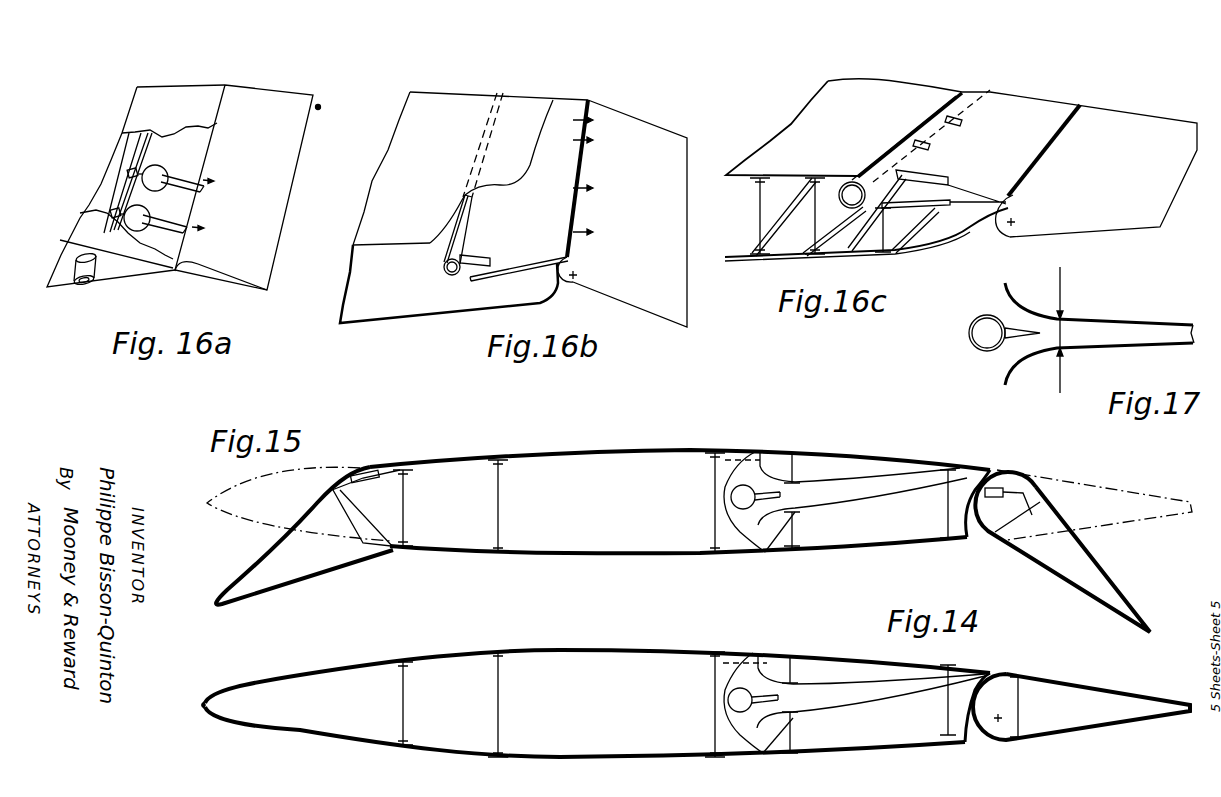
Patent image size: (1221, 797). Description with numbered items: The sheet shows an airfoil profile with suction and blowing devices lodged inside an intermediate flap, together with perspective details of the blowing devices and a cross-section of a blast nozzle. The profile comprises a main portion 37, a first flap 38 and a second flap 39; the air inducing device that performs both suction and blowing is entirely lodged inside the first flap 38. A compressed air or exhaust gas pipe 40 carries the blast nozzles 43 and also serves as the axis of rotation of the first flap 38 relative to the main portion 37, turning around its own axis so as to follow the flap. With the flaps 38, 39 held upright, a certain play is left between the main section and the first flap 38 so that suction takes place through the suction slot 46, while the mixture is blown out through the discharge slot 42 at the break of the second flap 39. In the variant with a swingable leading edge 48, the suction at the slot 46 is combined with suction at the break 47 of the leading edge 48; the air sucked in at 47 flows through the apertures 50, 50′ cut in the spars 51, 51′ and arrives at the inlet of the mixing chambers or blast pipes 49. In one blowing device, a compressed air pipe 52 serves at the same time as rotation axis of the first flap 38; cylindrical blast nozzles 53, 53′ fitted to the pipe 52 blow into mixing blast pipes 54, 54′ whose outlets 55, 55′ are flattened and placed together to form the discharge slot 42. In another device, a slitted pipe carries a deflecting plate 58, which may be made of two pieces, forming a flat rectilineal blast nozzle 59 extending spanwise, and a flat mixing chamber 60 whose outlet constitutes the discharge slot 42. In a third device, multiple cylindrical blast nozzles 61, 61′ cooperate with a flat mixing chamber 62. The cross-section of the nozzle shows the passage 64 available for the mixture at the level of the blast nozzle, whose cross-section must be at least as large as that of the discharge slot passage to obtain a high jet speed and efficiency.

In FIG. 14, the main portion 37 is at (557, 650).
In FIG. 16A, the first flap 38 is at (138, 109).
In FIG. 16B, the first flap 38 is at (531, 98).
In FIG. 15, the first flap 38 is at (888, 549).
In FIG. 14, the first flap 38 is at (885, 748).
In FIG. 16B, the second flap 39 is at (650, 126).
In FIG. 15, the second flap 39 is at (1040, 563).
In FIG. 14, the second flap 39 is at (1080, 728).
In FIG. 15, the compressed air or exhaust gas pipe 40 is at (745, 517).
In FIG. 14, the compressed air or exhaust gas pipe 40 is at (740, 716).
In FIG. 16B, the discharge slot 42 is at (594, 121).
In FIG. 15, the discharge slot 42 is at (990, 471).
In FIG. 14, the discharge slot 42 is at (990, 673).
In FIG. 15, the blast nozzles 43 is at (782, 495).
In FIG. 14, the blast nozzles 43 is at (780, 698).
In FIG. 15, the suction slot 46 is at (755, 417).
In FIG. 14, the suction slot 46 is at (753, 649).
In FIG. 15, the leading edge suction slot 47 is at (369, 466).
In FIG. 15, the swingable leading edge 48 is at (331, 571).
In FIG. 15, the mixing chambers or blast pipes 49 is at (870, 497).
In FIG. 14, the mixing chambers or blast pipes 49 is at (850, 708).
In FIG. 15, the aperture 50 is at (387, 503).
In FIG. 15, the aperture 50′ is at (500, 509).
In FIG. 15, the spar 51 is at (405, 552).
In FIG. 15, the spar 51′ is at (498, 557).
In FIG. 16A, the compressed air pipe 52 is at (55, 300).
In FIG. 16A, the cylindrical blast nozzle 53 is at (111, 213).
In FIG. 16A, the cylindrical blast nozzle 53′ is at (128, 173).
In FIG. 16A, the mixing blast pipe 54 is at (164, 200).
In FIG. 16A, the mixing blast pipe 54′ is at (170, 173).
In FIG. 16A, the outlet 55 is at (195, 236).
In FIG. 16A, the outlet 55′ is at (209, 192).
In FIG. 16B, the deflecting plate 58 is at (446, 259).
In FIG. 16B, the flat rectilineal blast nozzle 59 is at (491, 252).
In FIG. 16B, the flat mixing chamber 60 is at (511, 266).
In FIG. 16C, the cylindrical blast nozzle 61 is at (899, 182).
In FIG. 16C, the cylindrical blast nozzle 61′ is at (931, 148).
In FIG. 16C, the flat mixing chamber 62 is at (946, 208).
In FIG. 17, the passage 64 is at (1068, 318).